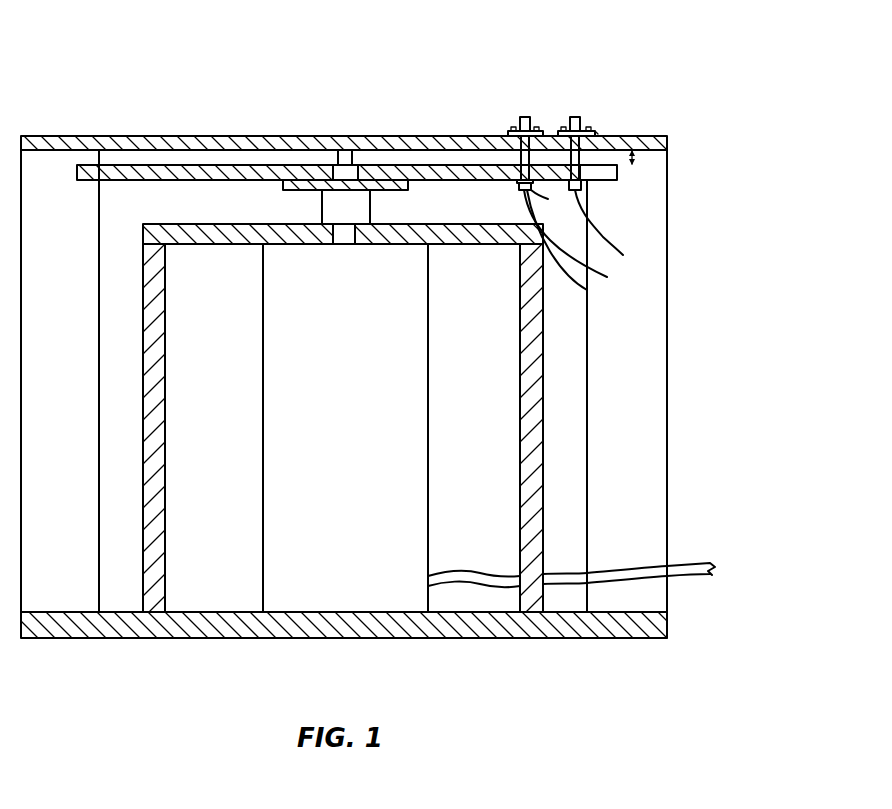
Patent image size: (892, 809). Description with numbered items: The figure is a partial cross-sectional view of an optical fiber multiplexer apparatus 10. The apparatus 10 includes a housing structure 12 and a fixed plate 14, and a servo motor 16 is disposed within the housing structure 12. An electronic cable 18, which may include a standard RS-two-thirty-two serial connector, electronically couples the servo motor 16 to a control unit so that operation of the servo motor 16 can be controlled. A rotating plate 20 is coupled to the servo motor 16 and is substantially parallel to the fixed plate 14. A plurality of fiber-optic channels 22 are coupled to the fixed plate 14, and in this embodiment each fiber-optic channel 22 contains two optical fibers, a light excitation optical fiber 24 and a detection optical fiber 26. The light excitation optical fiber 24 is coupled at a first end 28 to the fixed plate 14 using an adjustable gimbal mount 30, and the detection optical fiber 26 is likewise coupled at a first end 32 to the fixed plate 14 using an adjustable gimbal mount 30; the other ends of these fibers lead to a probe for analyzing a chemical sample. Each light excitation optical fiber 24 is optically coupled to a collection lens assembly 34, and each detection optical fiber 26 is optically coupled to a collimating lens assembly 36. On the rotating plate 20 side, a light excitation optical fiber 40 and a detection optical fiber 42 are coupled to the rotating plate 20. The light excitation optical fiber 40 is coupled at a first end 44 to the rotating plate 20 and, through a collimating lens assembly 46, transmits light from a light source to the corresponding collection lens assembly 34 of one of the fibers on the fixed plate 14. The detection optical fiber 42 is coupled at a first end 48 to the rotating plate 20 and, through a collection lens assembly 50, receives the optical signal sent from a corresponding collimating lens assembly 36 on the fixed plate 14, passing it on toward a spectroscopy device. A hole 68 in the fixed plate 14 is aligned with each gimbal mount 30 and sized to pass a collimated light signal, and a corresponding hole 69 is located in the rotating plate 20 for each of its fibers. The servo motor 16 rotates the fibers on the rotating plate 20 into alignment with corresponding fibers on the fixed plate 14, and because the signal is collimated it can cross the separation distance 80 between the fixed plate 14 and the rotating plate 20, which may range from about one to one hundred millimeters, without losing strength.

The optical fiber multiplexer apparatus 10 is at (150, 97).
The housing structure 12 is at (248, 129).
The fixed plate 14 is at (268, 150).
The servo motor 16 is at (336, 387).
The electronic cable 18 is at (605, 580).
The rotating plate 20 is at (618, 180).
The fiber-optic channel 22 is at (528, 122).
The light excitation optical fiber 24 is at (663, 129).
The detection optical fiber 26 is at (528, 117).
The first end 28 is at (580, 118).
The adjustable gimbal mount 30 is at (598, 132).
The first end 32 is at (523, 117).
The collection lens assembly 34 is at (594, 129).
The collimating lens assembly 36 is at (510, 129).
The light excitation optical fiber 40 is at (603, 237).
The detection optical fiber 42 is at (587, 290).
The first end 44 is at (590, 187).
The collimating lens assembly 46 is at (583, 186).
The first end 48 is at (520, 190).
The collection lens assembly 50 is at (517, 182).
The hole 68 is at (497, 136).
The hole 69 is at (548, 199).
The separation distance 80 is at (636, 161).